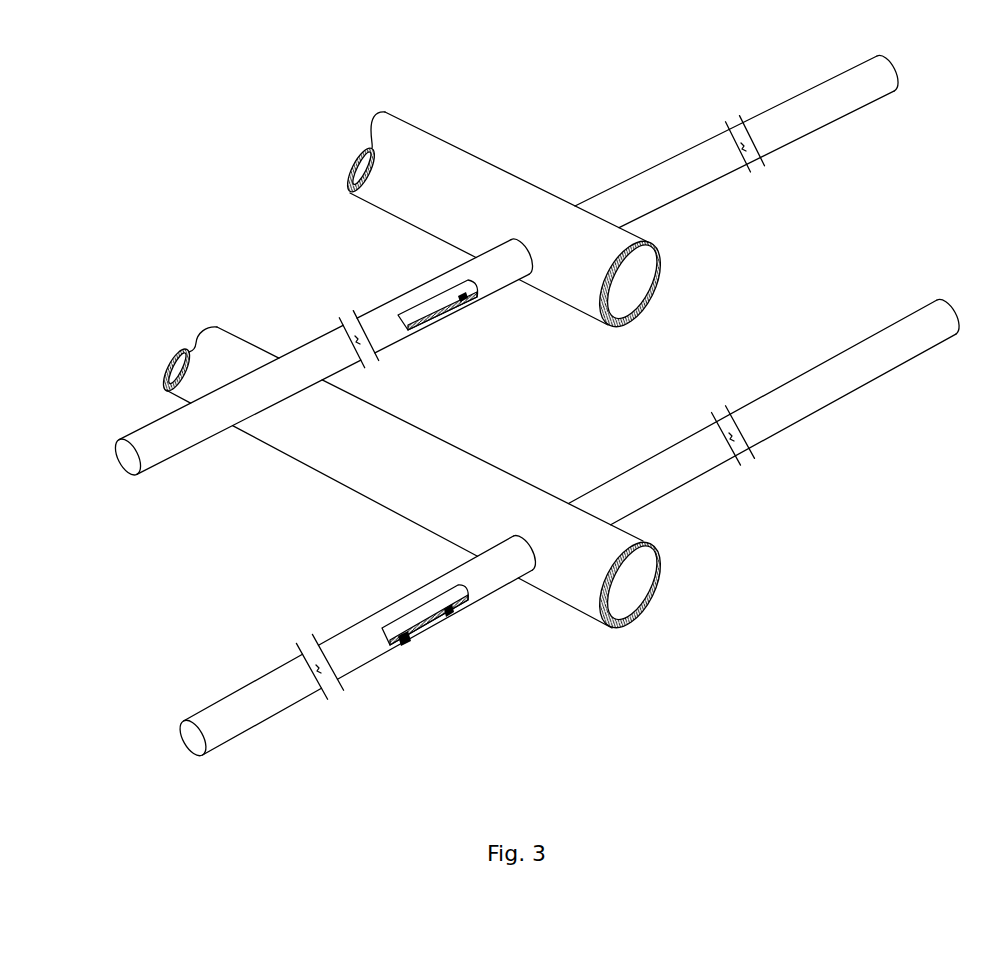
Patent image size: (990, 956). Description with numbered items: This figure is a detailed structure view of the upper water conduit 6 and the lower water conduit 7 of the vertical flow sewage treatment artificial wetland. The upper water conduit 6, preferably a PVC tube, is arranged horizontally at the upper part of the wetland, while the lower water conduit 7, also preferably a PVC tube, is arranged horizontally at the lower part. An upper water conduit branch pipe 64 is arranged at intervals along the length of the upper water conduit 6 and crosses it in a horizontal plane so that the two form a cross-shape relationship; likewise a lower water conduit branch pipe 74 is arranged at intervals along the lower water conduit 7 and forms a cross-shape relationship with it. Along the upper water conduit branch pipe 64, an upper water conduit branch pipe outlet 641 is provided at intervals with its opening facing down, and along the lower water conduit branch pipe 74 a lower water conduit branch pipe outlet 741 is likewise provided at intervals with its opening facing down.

The upper water conduit 6 is at (493, 178).
The upper water conduit branch pipe 64 is at (282, 373).
The upper water conduit branch pipe outlet 641 is at (427, 305).
The lower water conduit 7 is at (565, 575).
The lower water conduit branch pipe 74 is at (490, 580).
The lower water conduit branch pipe outlet 741 is at (403, 648).